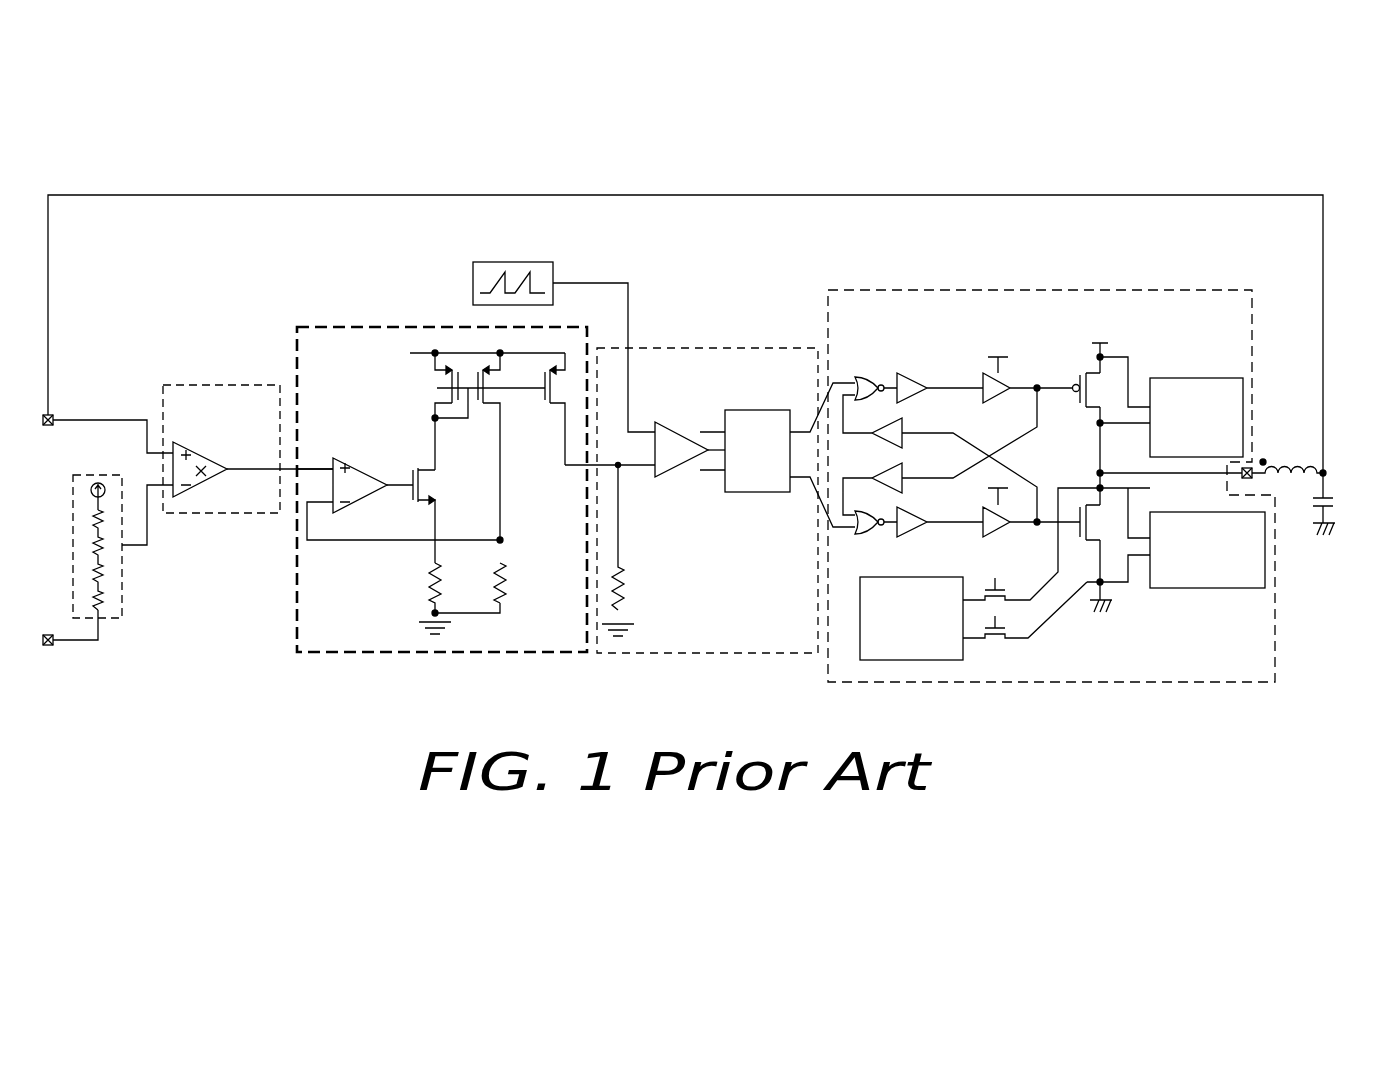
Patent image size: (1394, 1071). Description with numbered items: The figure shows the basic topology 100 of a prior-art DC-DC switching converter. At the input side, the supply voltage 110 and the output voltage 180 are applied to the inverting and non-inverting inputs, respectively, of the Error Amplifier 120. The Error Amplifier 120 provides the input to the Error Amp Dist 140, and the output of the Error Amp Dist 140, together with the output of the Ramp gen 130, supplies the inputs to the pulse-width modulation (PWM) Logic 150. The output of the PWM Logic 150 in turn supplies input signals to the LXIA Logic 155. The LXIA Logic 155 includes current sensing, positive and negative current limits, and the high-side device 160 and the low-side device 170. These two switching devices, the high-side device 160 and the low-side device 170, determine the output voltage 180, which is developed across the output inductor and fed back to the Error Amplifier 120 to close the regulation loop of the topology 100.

The basic topology 100 is at (182, 120).
The supply voltage VDAC 110 is at (80, 476).
The Error Amplifier 120 is at (190, 386).
The Ramp gen 130 is at (473, 274).
The Error Amp Dist 140 is at (330, 327).
The Pulse-width modulation (PWM) Logic 150 is at (668, 348).
The LXIA Logic 155 is at (898, 290).
The high-side device 160 is at (1074, 380).
The low-side device 170 is at (1076, 512).
The output voltage VOUT 180 is at (1312, 498).